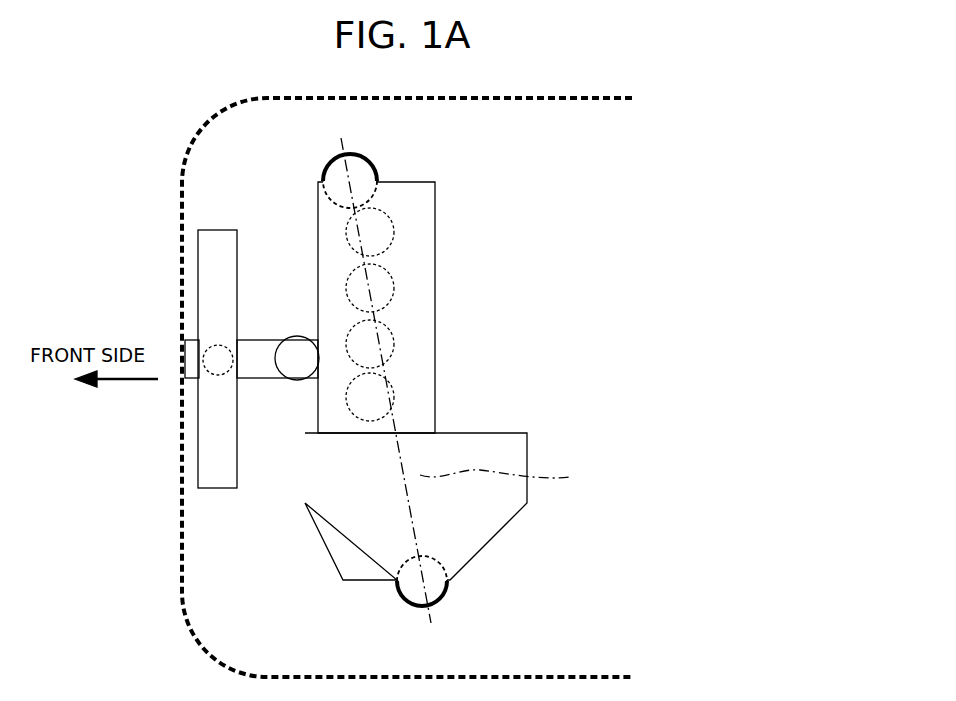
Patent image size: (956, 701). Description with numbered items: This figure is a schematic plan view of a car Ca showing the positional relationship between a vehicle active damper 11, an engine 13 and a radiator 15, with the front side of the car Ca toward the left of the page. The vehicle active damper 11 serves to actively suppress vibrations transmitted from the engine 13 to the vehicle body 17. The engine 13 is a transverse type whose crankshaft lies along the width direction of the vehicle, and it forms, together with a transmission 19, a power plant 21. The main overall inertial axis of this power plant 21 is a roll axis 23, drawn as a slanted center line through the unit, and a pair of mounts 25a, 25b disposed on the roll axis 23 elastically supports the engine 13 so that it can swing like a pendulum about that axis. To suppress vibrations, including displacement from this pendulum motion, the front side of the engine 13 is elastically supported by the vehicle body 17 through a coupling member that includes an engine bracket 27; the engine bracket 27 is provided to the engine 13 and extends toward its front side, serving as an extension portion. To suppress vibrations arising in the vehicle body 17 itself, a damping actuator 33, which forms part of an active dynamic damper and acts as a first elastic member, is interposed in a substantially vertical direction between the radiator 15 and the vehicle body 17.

The car Ca is at (556, 98).
The vehicle active damper 11 is at (268, 313).
The engine 13 is at (425, 332).
The radiator 15 is at (218, 275).
The vehicle body 17 is at (255, 365).
The transmission 19 is at (450, 453).
The power plant 21 is at (523, 315).
The roll axis 23 is at (468, 380).
The mount 25a is at (368, 160).
The mount 25b is at (443, 603).
The engine bracket 27 is at (298, 352).
The damping actuator 33 is at (217, 374).